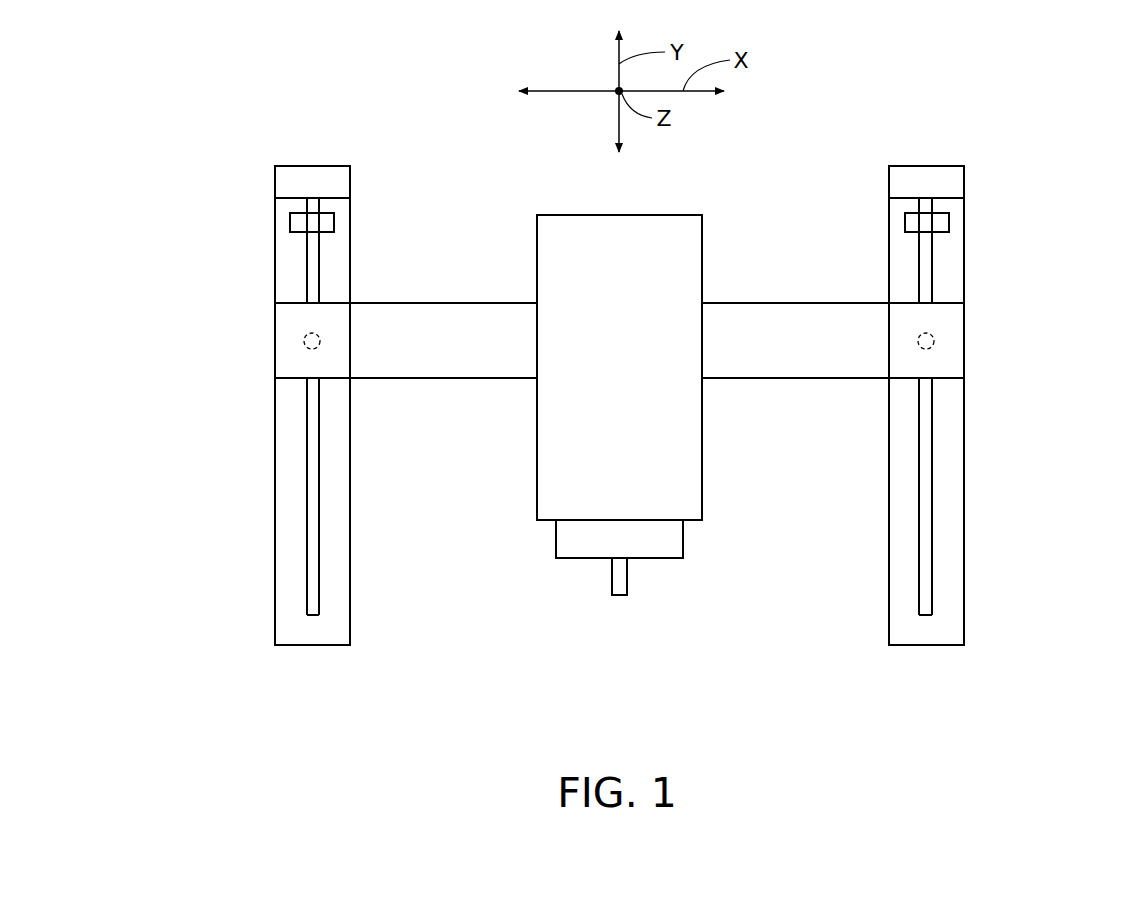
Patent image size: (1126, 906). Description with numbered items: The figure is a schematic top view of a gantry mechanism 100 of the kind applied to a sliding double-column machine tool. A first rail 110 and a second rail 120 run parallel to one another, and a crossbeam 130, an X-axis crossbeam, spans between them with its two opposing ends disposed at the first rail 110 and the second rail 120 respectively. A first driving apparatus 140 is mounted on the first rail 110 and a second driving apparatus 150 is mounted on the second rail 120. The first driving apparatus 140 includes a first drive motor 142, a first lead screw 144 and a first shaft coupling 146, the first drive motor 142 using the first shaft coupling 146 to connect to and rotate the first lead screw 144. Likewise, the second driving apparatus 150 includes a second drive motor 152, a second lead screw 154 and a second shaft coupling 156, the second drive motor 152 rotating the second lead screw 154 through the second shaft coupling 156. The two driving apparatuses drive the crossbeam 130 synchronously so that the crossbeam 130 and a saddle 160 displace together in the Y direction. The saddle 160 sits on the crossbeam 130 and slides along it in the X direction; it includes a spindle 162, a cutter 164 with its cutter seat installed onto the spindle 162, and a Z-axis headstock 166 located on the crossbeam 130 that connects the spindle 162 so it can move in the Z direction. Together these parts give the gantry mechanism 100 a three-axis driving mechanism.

The gantry mechanism 100 is at (266, 50).
The first rail 110 is at (275, 432).
The second rail 120 is at (964, 432).
The crossbeam 130 is at (757, 303).
The first driving apparatus 140 is at (243, 390).
The first drive motor 142 is at (290, 183).
The first lead screw 144 is at (313, 260).
The first shaft coupling 146 is at (300, 220).
The second driving apparatus 150 is at (995, 390).
The second drive motor 152 is at (947, 183).
The second lead screw 154 is at (926, 260).
The second shaft coupling 156 is at (940, 221).
The saddle 160 is at (630, 413).
The spindle 162 is at (572, 537).
The cutter 164 is at (618, 577).
The Z-axis headstock 166 is at (552, 453).